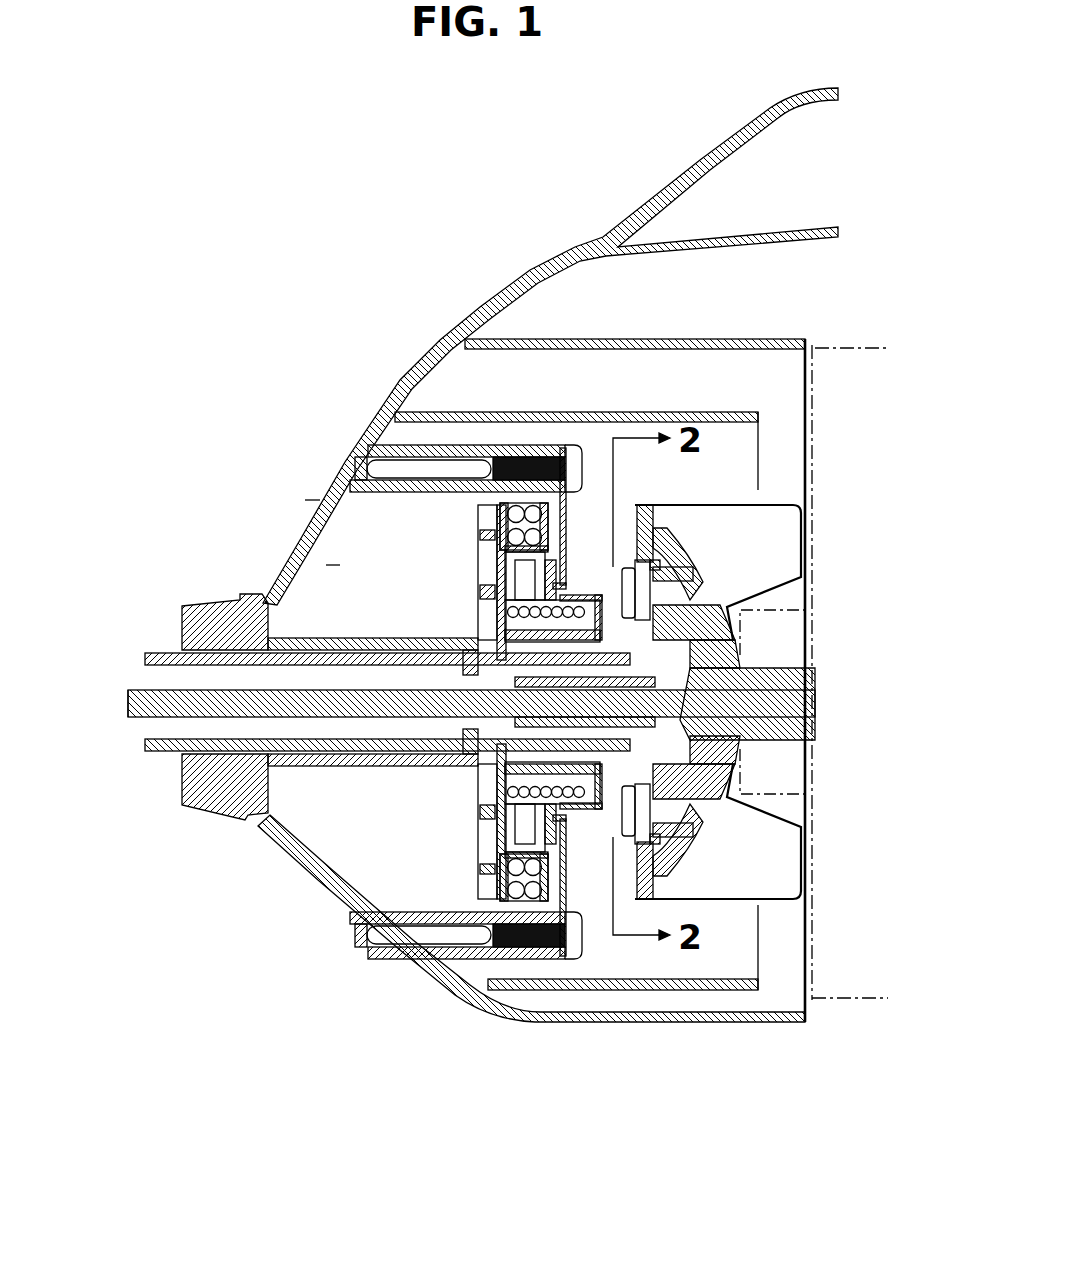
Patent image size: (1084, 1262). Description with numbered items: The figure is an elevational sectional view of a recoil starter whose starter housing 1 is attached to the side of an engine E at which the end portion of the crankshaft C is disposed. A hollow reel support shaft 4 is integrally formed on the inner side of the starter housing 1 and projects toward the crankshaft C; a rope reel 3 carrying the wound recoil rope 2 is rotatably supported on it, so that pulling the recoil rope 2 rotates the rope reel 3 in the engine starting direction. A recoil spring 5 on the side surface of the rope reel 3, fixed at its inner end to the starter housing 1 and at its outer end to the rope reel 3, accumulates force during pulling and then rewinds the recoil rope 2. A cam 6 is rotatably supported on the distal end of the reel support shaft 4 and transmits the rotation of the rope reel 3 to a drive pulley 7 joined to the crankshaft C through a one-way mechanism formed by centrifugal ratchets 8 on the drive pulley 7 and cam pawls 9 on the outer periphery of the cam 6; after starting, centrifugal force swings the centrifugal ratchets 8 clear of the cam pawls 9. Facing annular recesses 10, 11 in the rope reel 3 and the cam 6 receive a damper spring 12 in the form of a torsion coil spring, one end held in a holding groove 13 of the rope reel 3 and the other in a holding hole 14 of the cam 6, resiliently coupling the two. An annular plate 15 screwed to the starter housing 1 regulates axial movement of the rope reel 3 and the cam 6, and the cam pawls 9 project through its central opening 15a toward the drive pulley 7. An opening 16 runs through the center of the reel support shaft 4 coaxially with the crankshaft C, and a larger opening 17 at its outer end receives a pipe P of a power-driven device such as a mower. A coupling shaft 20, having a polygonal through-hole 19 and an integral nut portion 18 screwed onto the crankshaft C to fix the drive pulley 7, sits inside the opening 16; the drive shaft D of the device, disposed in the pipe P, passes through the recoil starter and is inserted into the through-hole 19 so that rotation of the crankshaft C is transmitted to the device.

The starter housing 1 is at (482, 307).
The recoil rope 2 is at (496, 500).
The rope reel 3 is at (437, 458).
The reel support shaft 4 is at (478, 610).
The recoil spring 5 is at (478, 830).
The cam 6 is at (598, 820).
The drive pulley 7 is at (665, 805).
The centrifugal ratchet 8 is at (700, 913).
The cam pawl 9 is at (700, 578).
The annular recess 10 is at (478, 840).
The annular recess 11 is at (655, 538).
The damper spring 12 is at (318, 556).
The holding groove 13 is at (500, 565).
The holding hole 14 is at (580, 800).
The annular plate 15 is at (572, 475).
The opening 15a is at (592, 580).
The opening 16 is at (460, 718).
The opening 17 is at (253, 662).
The nut portion 18 is at (713, 833).
The through-hole 19 is at (813, 707).
The coupling shaft 20 is at (800, 648).
The drive shaft D is at (128, 717).
The pipe P is at (157, 750).
The engine E is at (855, 348).
The crankshaft C is at (812, 665).